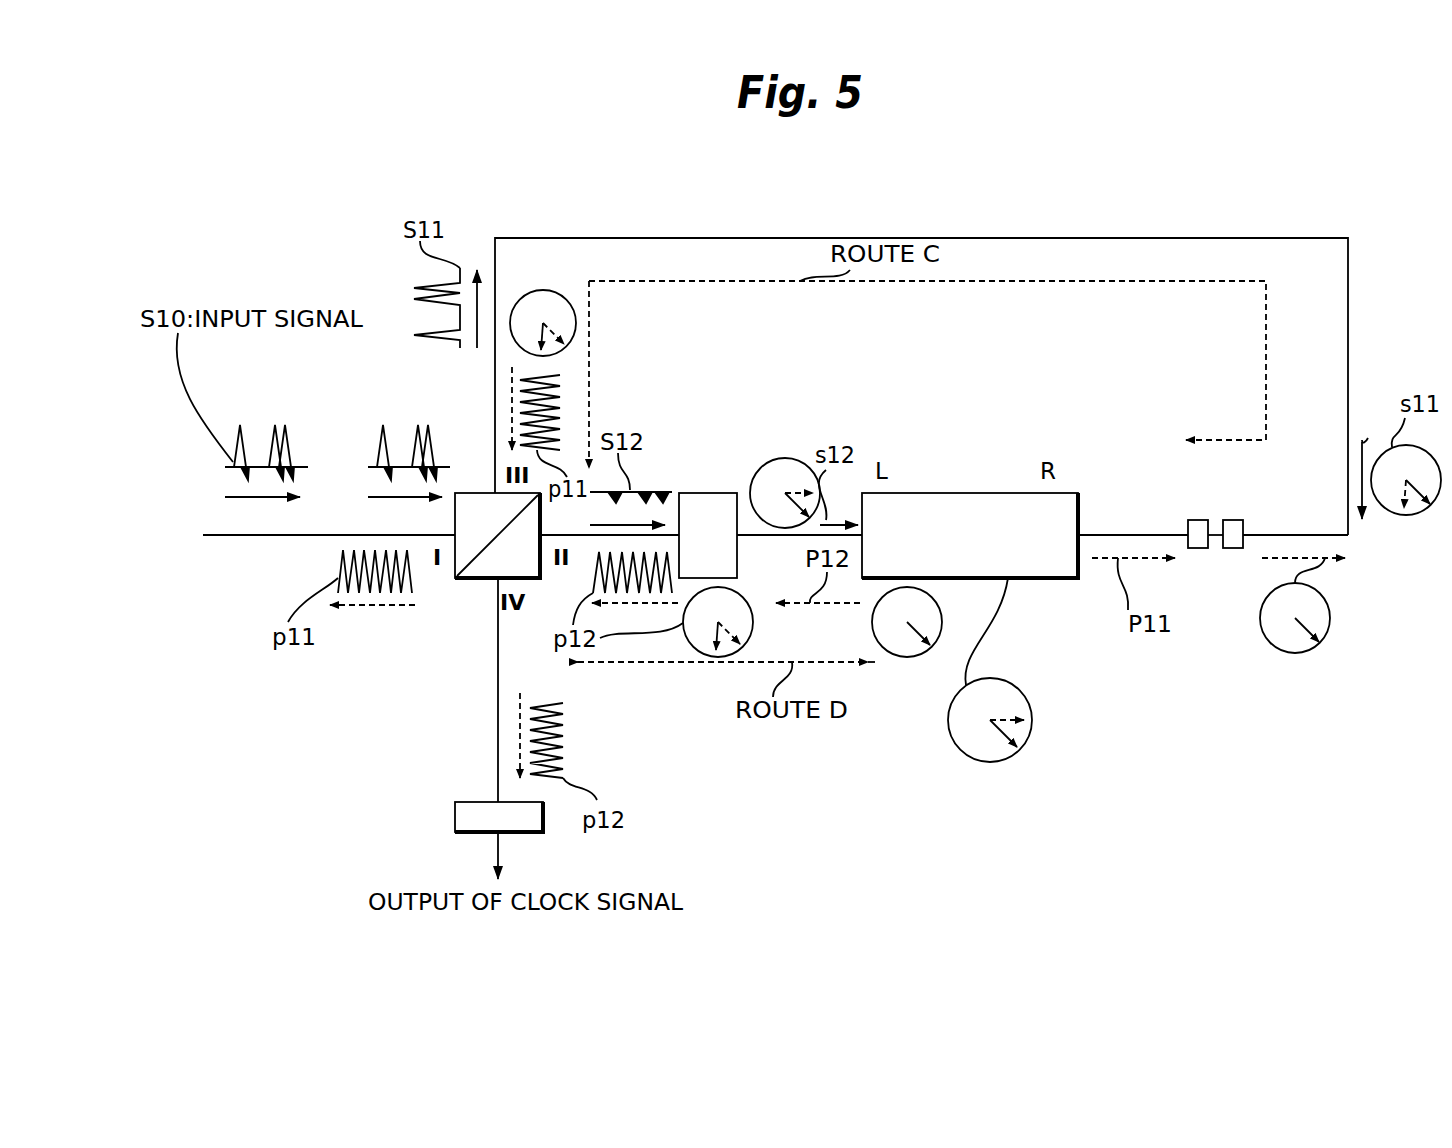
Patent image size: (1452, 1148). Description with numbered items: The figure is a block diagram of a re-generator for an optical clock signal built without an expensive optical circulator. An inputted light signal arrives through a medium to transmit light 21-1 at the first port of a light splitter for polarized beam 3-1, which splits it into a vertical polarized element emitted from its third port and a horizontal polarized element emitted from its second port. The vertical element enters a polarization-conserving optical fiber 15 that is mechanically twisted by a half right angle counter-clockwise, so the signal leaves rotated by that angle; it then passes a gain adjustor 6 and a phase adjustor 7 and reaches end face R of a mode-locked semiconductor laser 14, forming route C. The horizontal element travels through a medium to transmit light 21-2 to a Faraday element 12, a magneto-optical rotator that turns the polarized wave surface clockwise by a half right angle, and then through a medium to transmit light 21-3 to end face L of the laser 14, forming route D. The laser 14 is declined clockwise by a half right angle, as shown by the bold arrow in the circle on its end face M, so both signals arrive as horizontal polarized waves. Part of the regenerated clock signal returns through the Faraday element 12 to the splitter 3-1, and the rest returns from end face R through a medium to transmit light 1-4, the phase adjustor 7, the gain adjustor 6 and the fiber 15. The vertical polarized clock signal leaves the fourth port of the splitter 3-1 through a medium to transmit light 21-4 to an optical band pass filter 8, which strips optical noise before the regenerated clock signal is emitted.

The optical fiber 15 is at (623, 238).
The medium to transmit light 21-1 is at (368, 535).
The light splitter for polarized beam 3-1 is at (460, 578).
The medium to transmit light 21-2 is at (530, 578).
The Faraday element 12 is at (713, 493).
The medium to transmit light 21-3 is at (745, 535).
The mode-locked semiconductor laser 14 is at (925, 493).
The end face of the laser M is at (983, 762).
The medium to transmit light 1-4 is at (1123, 535).
The phase adjustor 7 is at (1198, 548).
The gain adjustor 6 is at (1233, 548).
The medium to transmit light 21-4 is at (498, 790).
The optical band pass filter 8 is at (535, 832).